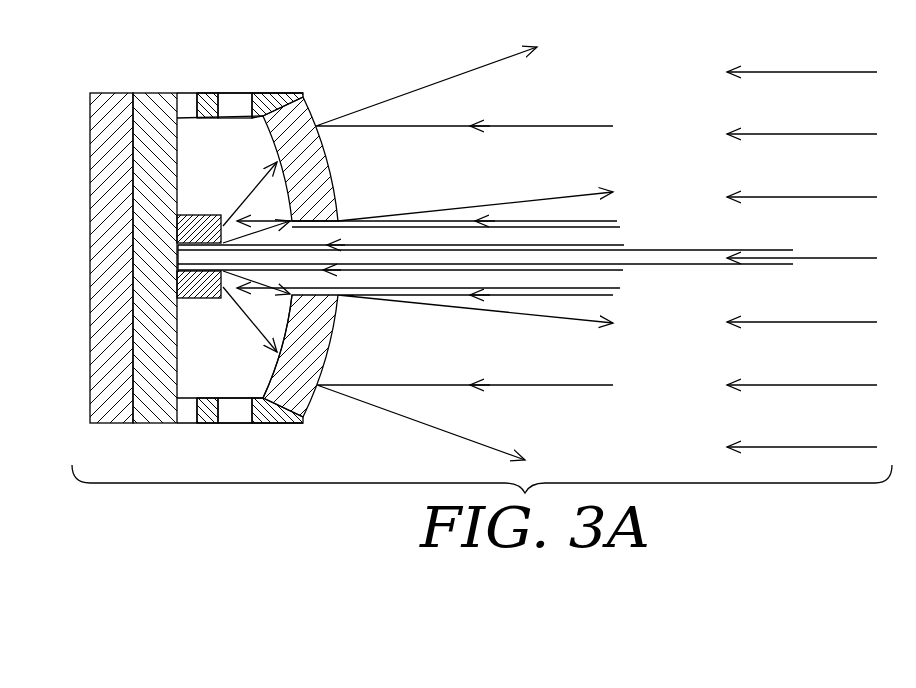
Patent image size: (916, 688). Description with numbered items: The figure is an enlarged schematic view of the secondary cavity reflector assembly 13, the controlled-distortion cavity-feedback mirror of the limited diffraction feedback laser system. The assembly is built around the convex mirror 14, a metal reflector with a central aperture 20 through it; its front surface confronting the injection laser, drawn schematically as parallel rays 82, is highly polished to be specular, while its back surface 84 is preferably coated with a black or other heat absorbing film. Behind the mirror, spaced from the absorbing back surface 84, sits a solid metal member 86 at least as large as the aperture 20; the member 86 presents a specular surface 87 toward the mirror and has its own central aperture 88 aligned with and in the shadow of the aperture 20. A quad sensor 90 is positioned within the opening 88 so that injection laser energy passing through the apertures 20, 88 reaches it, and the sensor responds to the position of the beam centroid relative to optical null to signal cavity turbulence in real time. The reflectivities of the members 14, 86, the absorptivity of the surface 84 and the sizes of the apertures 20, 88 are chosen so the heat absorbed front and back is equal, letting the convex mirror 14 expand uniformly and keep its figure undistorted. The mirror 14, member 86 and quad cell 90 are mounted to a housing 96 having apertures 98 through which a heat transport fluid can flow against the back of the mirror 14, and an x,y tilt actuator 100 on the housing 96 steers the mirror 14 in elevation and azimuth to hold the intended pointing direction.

The secondary cavity reflector assembly 13 is at (592, 164).
The convex mirror 14 is at (333, 350).
The central aperture 20 is at (290, 237).
The parallel rays 82 is at (832, 72).
The back surface 84 is at (272, 375).
The member 86 is at (194, 299).
The specular surface 87 is at (232, 292).
The central aperture 88 is at (215, 215).
The quad sensor 90 is at (176, 252).
The housing 96 is at (252, 405).
The apertures 98 is at (237, 100).
The x,y tilt actuator 100 is at (100, 204).